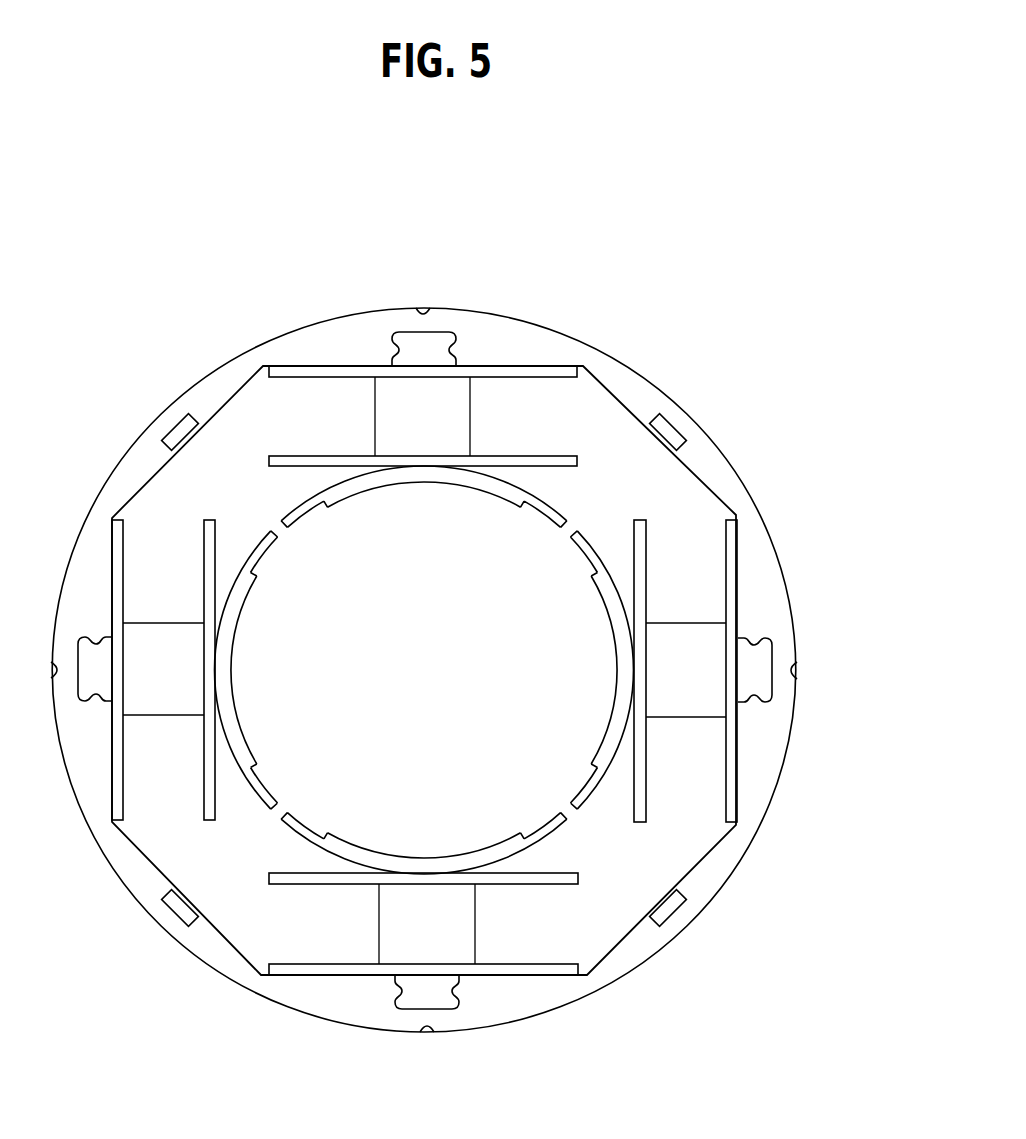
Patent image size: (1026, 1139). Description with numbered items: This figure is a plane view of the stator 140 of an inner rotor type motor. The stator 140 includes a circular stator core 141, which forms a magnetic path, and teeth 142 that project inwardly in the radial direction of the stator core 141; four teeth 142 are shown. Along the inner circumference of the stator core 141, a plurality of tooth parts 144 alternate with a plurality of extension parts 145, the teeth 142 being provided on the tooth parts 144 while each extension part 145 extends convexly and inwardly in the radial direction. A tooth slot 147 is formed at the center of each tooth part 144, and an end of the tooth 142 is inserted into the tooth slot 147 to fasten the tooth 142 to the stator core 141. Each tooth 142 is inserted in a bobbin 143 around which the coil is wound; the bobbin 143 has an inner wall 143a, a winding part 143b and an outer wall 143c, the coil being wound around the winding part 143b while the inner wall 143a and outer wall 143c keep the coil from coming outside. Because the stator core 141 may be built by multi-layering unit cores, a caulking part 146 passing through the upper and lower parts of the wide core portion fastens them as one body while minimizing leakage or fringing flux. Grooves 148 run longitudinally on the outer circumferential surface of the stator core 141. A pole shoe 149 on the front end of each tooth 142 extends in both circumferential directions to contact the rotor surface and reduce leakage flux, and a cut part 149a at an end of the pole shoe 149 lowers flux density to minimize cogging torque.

The stator 140 is at (624, 322).
The stator core 141 is at (707, 467).
The tooth 142 is at (410, 345).
The bobbin 143 is at (648, 557).
The inner wall 143a is at (643, 803).
The winding part 143b is at (687, 705).
The outer wall 143c is at (730, 780).
The tooth part 144 is at (513, 358).
The extension part 145 is at (627, 397).
The caulking part 146 is at (672, 908).
The tooth slot 147 is at (762, 653).
The groove 148 is at (800, 673).
The pole shoe 149 is at (240, 605).
The cut part 149a is at (265, 551).